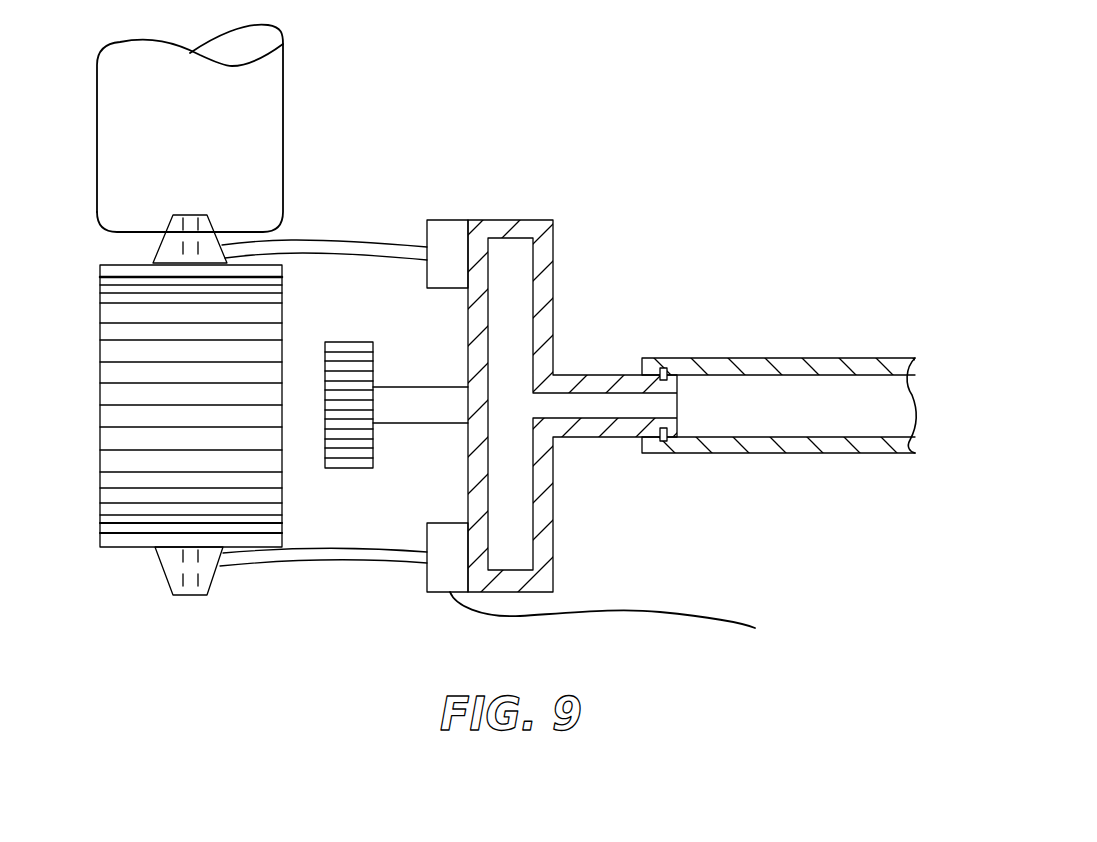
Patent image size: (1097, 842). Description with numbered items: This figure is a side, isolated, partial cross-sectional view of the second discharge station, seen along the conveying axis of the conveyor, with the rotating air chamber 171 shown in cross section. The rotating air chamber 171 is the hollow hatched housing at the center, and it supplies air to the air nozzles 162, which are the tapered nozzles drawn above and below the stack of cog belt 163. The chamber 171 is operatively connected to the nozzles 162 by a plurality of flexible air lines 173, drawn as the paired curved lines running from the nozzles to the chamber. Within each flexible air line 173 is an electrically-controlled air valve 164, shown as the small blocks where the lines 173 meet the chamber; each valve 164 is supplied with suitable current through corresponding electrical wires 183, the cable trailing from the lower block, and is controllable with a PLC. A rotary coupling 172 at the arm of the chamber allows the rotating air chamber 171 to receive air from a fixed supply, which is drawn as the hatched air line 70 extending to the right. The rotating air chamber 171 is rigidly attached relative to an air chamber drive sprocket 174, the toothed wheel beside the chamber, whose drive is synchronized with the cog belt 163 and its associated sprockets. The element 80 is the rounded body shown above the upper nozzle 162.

The stationary air line 70 is at (783, 445).
The reservoir bag 80 is at (265, 100).
The air nozzle 162 is at (172, 567).
The cog belt 163 is at (133, 270).
The electrically-controlled air valve 164 is at (450, 228).
The rotating air chamber 171 is at (512, 228).
The rotary coupling 172 is at (663, 368).
The flexible air line 173 is at (333, 248).
The air chamber drive sprocket 174 is at (350, 470).
The electrical wires 183 is at (650, 610).